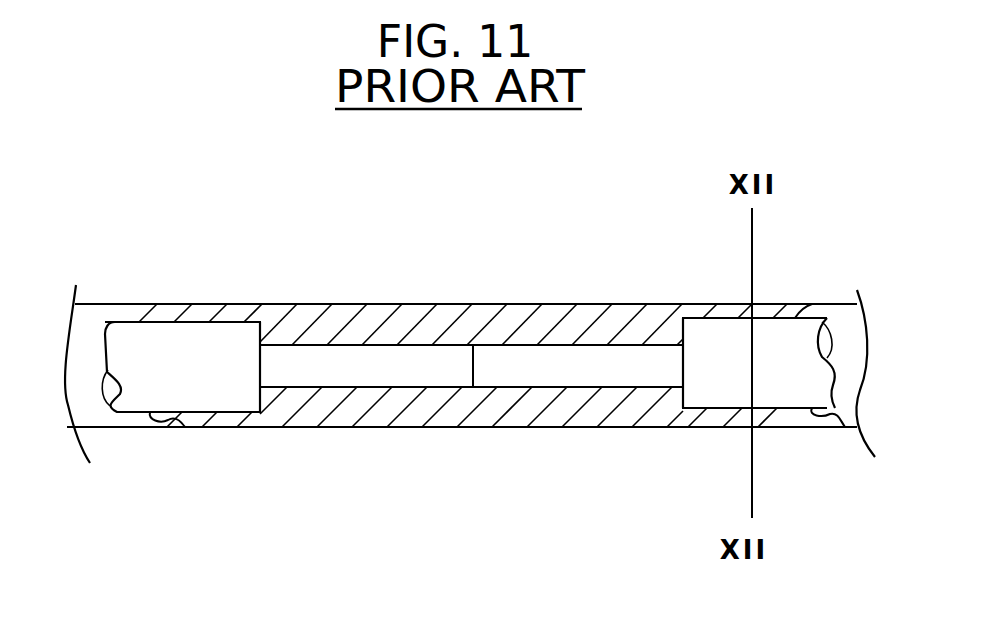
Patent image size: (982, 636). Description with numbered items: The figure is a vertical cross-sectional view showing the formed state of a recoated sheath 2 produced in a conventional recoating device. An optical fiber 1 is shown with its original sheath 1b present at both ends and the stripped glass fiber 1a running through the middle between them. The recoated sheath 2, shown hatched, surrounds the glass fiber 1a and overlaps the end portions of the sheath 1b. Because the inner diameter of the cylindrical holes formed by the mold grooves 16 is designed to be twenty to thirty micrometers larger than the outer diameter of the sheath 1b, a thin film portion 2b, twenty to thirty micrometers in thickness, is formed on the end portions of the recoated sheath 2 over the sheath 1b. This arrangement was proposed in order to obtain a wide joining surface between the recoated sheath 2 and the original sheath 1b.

The optical fiber 1 is at (139, 312).
The glass fiber 1a is at (527, 367).
The sheath 1b is at (184, 383).
The recoated sheath 2 is at (407, 305).
The thin film portion 2b is at (225, 305).
The mold grooves 16 is at (857, 306).